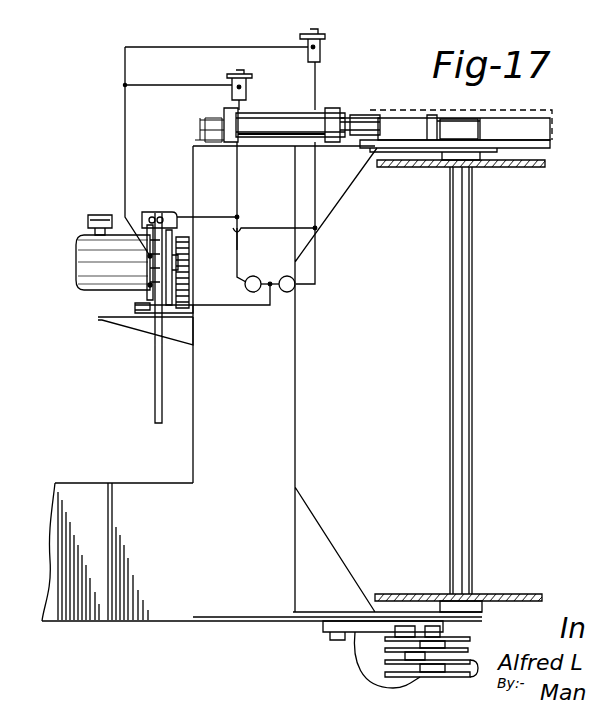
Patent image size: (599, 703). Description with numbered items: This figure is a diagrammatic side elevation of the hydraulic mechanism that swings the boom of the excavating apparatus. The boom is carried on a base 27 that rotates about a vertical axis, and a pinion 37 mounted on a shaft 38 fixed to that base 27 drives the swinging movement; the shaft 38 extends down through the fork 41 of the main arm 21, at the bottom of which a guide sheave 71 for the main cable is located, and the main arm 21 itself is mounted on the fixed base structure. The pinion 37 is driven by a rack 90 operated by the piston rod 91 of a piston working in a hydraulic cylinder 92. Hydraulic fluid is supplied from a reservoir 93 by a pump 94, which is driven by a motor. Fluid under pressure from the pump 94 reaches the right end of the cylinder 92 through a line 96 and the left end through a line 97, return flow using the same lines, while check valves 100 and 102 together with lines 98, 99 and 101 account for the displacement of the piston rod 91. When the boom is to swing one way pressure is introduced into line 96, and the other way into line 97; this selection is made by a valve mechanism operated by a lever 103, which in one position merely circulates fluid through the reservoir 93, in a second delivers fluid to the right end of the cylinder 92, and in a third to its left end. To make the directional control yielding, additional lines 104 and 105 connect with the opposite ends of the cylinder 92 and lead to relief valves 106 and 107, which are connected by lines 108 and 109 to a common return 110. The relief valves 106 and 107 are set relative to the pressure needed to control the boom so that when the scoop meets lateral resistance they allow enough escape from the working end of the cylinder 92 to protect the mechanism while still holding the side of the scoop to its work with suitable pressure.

The main arm 21 is at (122, 490).
The base 27 is at (547, 164).
The pinion 37 is at (482, 127).
The shaft 38 is at (473, 319).
The fork 41 is at (296, 430).
The guide sheave 71 is at (463, 656).
The rack 90 is at (392, 118).
The piston rod 91 is at (338, 118).
The hydraulic cylinder 92 is at (281, 118).
The reservoir 93 is at (78, 262).
The pump 94 is at (152, 268).
The line 96 is at (286, 228).
The line 97 is at (239, 169).
The line 98 is at (316, 273).
The line 99 is at (232, 308).
The check valve 100 is at (296, 287).
The line 101 is at (237, 264).
The check valve 102 is at (245, 287).
The lever 103 is at (155, 358).
The line 104 is at (317, 80).
The line 105 is at (242, 104).
The relief valve 106 is at (322, 47).
The relief valve 107 is at (247, 82).
The line 108 is at (194, 90).
The line 109 is at (260, 50).
The common return 110 is at (125, 100).